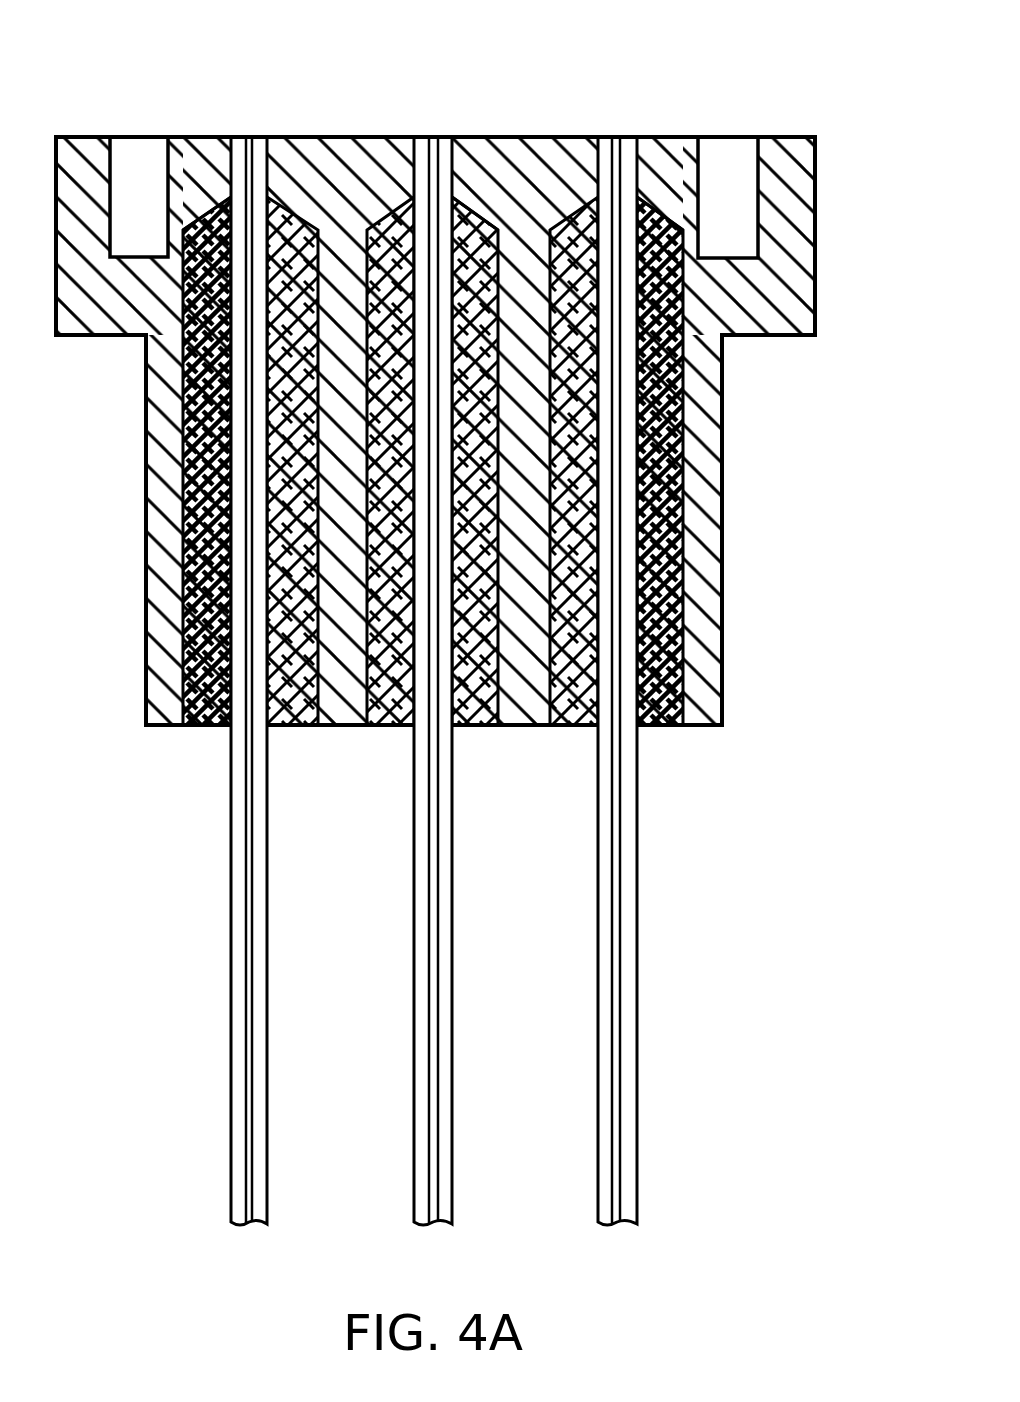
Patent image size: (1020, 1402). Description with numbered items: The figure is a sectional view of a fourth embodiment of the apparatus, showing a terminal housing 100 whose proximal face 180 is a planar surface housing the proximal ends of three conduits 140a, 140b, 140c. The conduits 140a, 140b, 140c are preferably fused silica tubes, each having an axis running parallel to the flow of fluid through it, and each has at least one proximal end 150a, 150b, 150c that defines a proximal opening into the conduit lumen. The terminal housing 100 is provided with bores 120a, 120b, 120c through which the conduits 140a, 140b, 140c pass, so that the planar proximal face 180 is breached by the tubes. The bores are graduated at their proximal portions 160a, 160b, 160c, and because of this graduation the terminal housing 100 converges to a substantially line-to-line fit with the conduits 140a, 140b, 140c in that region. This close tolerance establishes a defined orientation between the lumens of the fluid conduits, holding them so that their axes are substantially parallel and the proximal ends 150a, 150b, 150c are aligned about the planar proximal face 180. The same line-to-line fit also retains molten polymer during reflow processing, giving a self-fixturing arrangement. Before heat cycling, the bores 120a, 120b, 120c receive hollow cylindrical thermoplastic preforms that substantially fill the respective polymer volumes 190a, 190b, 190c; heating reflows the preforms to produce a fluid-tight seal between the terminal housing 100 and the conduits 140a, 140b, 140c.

The terminal housing 100 is at (815, 238).
The bore 120a is at (185, 461).
The bore 120b is at (596, 484).
The bore 120c is at (687, 461).
The conduit 140a is at (231, 877).
The conduit 140b is at (414, 1000).
The conduit 140c is at (637, 930).
The proximal end 150a is at (262, 137).
The proximal end 150b is at (442, 137).
The proximal end 150c is at (627, 137).
The proximal portion 160a is at (204, 185).
The proximal portion 160b is at (480, 228).
The proximal portion 160c is at (665, 228).
The proximal face 180 is at (377, 137).
The polymer volume 190a is at (210, 598).
The polymer volume 190b is at (478, 680).
The polymer volume 190c is at (660, 638).